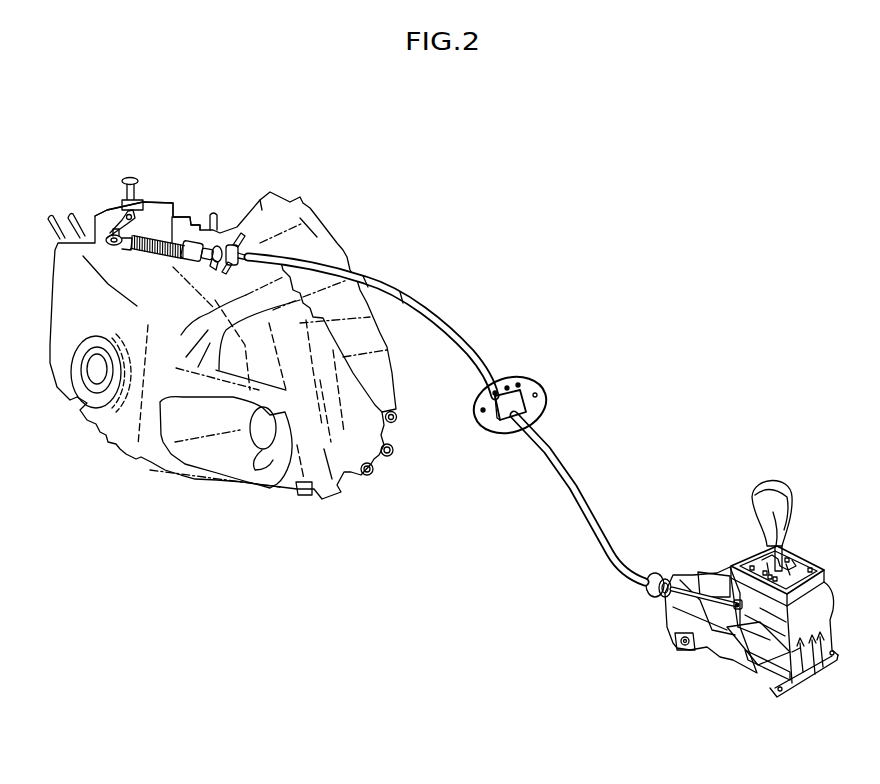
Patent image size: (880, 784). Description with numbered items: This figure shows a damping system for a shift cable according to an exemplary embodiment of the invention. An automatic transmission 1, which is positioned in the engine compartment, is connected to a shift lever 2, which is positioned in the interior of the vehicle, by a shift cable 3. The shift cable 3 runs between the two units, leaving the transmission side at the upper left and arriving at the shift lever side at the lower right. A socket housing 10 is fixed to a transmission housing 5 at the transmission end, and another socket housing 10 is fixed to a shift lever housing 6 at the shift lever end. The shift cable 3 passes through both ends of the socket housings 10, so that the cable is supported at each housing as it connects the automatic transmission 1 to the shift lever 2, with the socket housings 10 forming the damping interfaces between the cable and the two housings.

The automatic transmission 1 is at (275, 190).
The shift lever 2 is at (773, 488).
The shift cable 3 is at (575, 484).
The transmission housing 5 is at (112, 217).
The shift lever housing 6 is at (735, 655).
The socket housing 10 is at (177, 238).